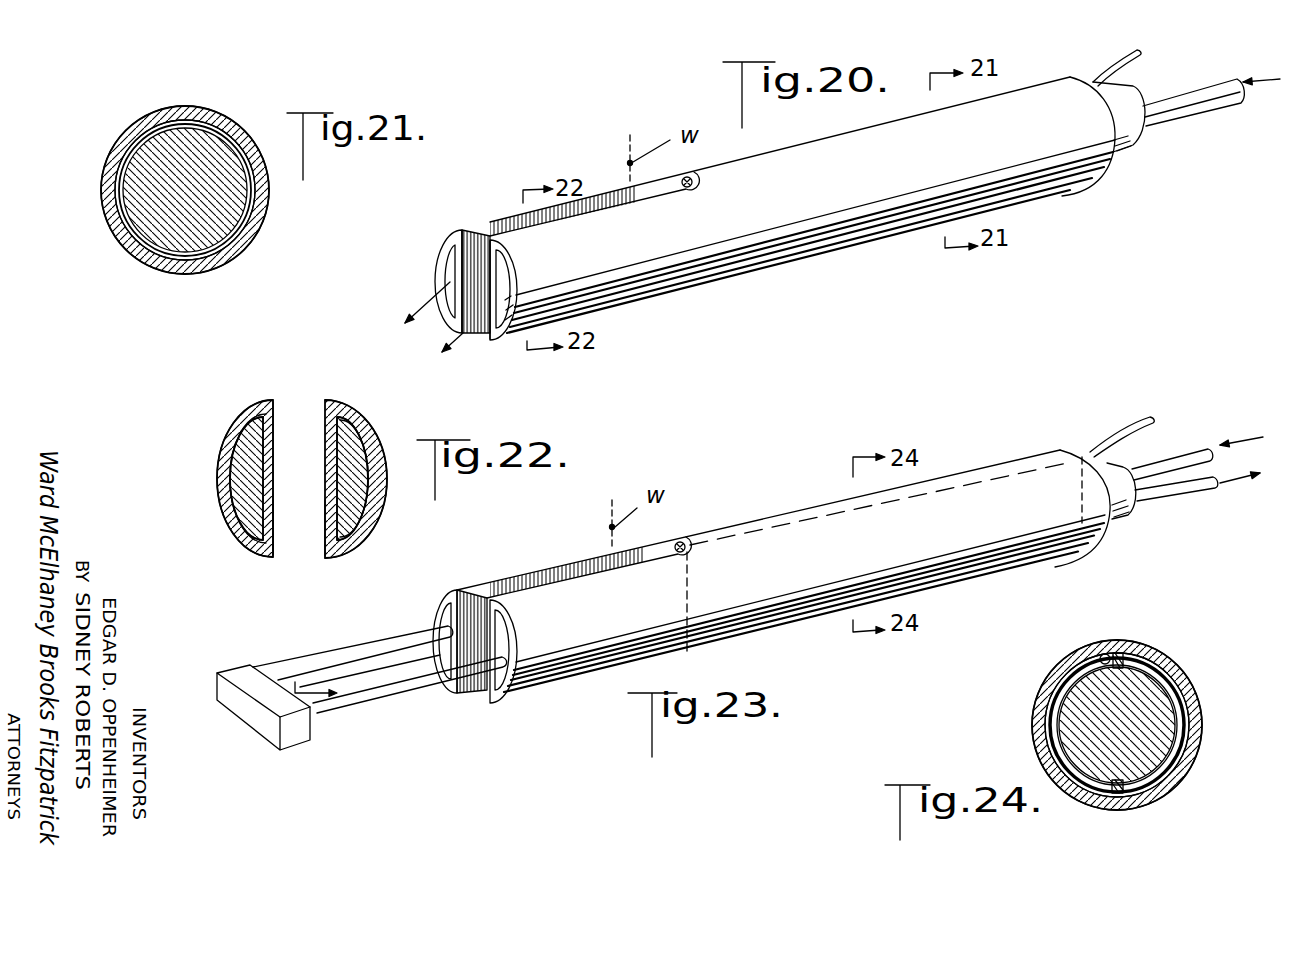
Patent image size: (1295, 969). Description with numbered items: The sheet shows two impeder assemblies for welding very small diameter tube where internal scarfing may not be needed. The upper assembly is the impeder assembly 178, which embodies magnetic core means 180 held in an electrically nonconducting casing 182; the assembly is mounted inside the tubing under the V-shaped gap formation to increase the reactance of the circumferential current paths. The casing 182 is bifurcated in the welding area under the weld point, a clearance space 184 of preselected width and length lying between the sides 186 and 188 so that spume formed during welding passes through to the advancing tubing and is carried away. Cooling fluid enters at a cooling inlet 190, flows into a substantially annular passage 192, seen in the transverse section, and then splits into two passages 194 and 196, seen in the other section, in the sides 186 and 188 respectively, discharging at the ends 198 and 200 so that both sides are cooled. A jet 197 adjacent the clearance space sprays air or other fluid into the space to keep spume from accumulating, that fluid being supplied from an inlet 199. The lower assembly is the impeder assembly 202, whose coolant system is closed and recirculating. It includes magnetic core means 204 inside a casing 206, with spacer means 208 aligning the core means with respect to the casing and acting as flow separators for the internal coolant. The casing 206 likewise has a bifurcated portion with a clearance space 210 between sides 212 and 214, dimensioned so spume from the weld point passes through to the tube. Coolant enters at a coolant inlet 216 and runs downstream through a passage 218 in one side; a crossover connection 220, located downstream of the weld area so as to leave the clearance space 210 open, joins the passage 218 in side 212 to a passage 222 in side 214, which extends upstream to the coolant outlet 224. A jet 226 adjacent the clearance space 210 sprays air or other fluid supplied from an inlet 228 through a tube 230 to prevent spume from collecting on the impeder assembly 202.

In FIG. 20, the impeder assembly 178 is at (714, 287).
In FIG. 21, the magnetic core means 180 is at (228, 222).
In FIG. 22, the magnetic core means 180 is at (232, 468).
In FIG. 20, the electrically nonconducting casing 182 is at (488, 341).
In FIG. 21, the electrically nonconducting casing 182 is at (235, 120).
In FIG. 22, the electrically nonconducting casing 182 is at (247, 415).
In FIG. 20, the clearance space 184 is at (487, 227).
In FIG. 22, the clearance space 184 is at (302, 425).
In FIG. 20, the side of bifurcated portion 186 is at (450, 258).
In FIG. 22, the side of bifurcated portion 186 is at (217, 487).
In FIG. 20, the side of bifurcated portion 188 is at (560, 287).
In FIG. 22, the side of bifurcated portion 188 is at (385, 505).
In FIG. 20, the cooling inlet 190 is at (1207, 94).
In FIG. 21, the substantially annular passage 192 is at (112, 207).
In FIG. 22, the passage 194 is at (228, 517).
In FIG. 22, the passage 196 is at (365, 530).
In FIG. 20, the jet 197 is at (690, 176).
In FIG. 20, the end of passage 198 is at (445, 280).
In FIG. 20, the inlet 199 is at (1110, 67).
In FIG. 20, the end of passage 200 is at (507, 332).
In FIG. 23, the impeder assembly 202 is at (767, 505).
In FIG. 24, the magnetic core means 204 is at (1162, 705).
In FIG. 23, the casing 206 is at (1022, 545).
In FIG. 24, the casing 206 is at (1193, 750).
In FIG. 24, the spacer means 208 is at (1147, 653).
In FIG. 23, the clearance space 210 is at (525, 583).
In FIG. 23, the side of bifurcated portion 212 is at (448, 610).
In FIG. 23, the side of bifurcated portion 214 is at (562, 670).
In FIG. 23, the coolant inlet 216 is at (1207, 447).
In FIG. 24, the passage 218 is at (1072, 678).
In FIG. 23, the crossover connection 220 is at (272, 702).
In FIG. 24, the passage 222 is at (1160, 775).
In FIG. 23, the coolant outlet 224 is at (1198, 495).
In FIG. 23, the jet 226 is at (681, 541).
In FIG. 23, the inlet 228 is at (1123, 432).
In FIG. 24, the tube 230 is at (1107, 650).